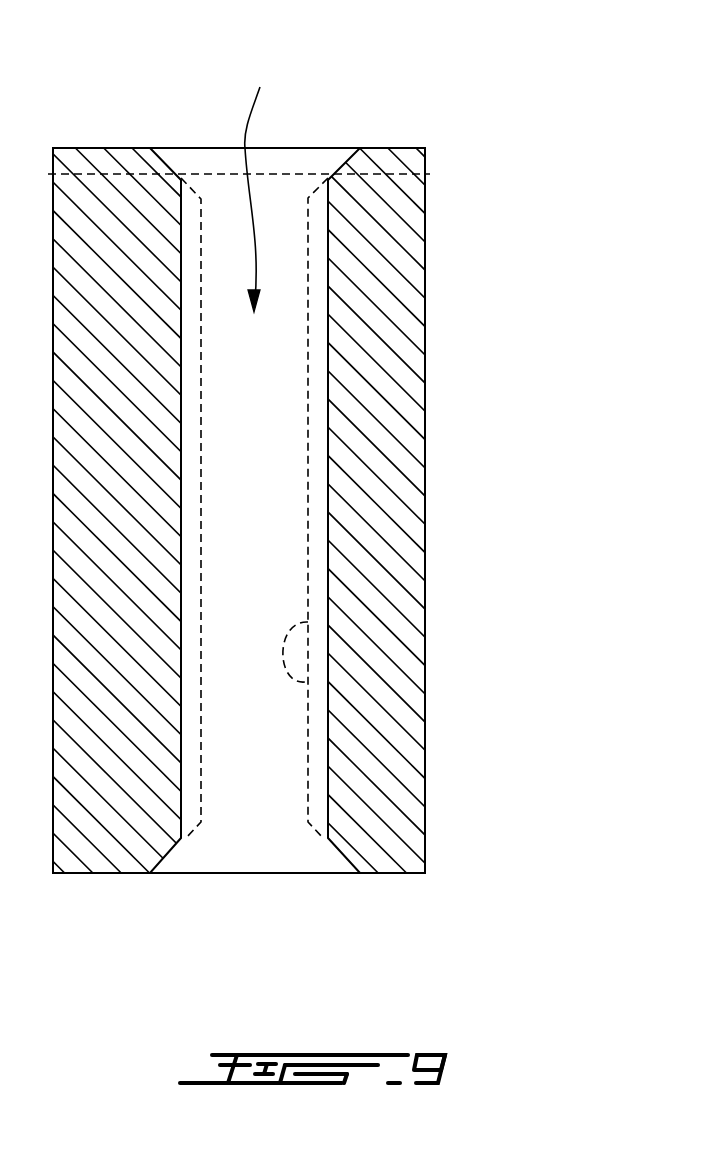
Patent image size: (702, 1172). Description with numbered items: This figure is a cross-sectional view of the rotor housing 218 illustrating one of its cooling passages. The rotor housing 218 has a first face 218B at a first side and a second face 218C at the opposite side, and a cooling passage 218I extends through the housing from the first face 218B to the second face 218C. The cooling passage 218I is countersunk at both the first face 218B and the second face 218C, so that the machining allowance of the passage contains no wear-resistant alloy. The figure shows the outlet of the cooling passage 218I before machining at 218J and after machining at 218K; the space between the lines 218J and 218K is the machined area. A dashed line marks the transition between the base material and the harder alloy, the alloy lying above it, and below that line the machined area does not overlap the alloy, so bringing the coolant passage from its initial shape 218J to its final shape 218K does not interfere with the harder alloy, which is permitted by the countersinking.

The rotor housing 218 is at (385, 428).
The first face 218B is at (401, 148).
The second face 218C is at (393, 873).
The cooling passage 218I is at (262, 182).
The initial shape of the cooling passage outlet before machining 218J is at (305, 682).
The final shape of the cooling passage outlet after machining 218K is at (328, 555).